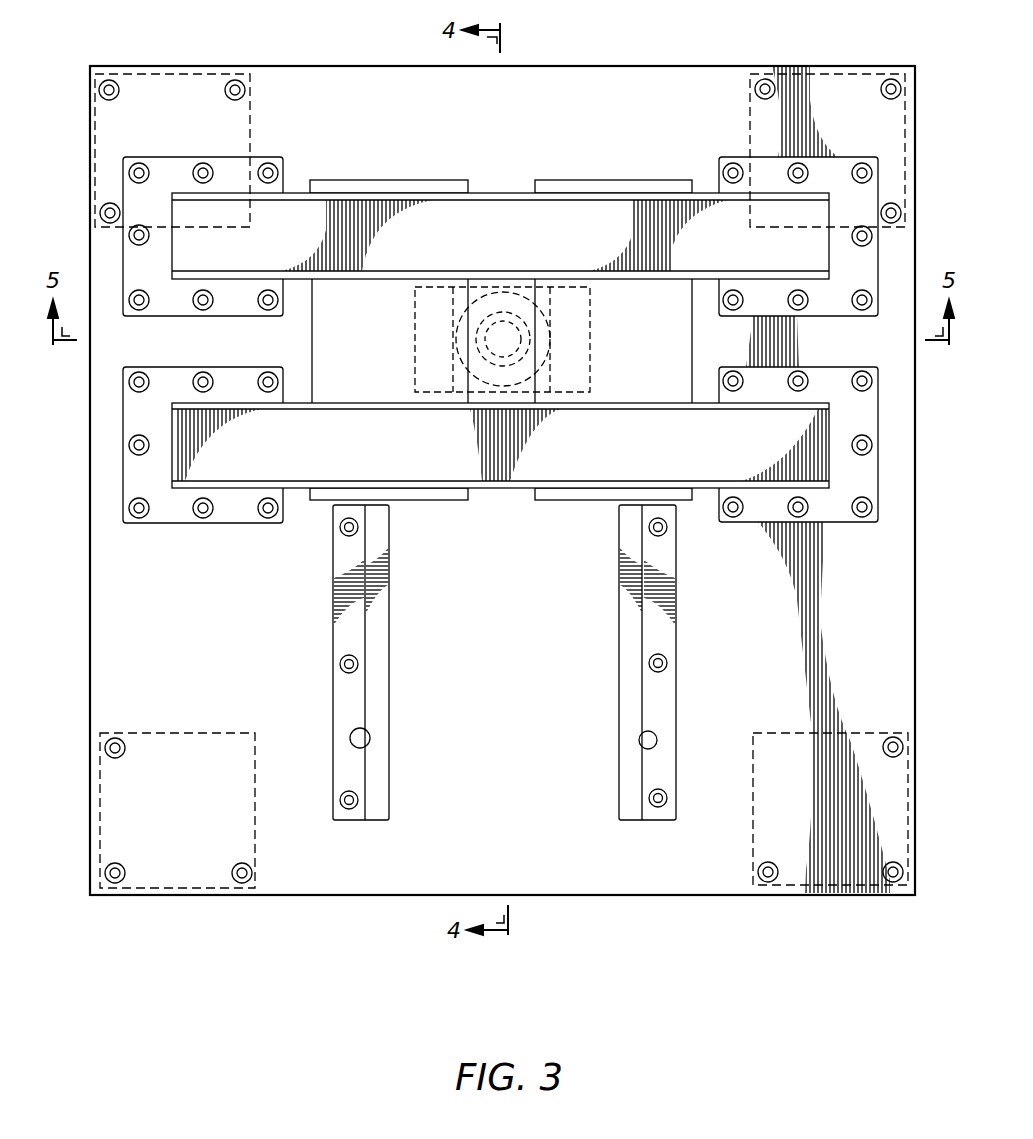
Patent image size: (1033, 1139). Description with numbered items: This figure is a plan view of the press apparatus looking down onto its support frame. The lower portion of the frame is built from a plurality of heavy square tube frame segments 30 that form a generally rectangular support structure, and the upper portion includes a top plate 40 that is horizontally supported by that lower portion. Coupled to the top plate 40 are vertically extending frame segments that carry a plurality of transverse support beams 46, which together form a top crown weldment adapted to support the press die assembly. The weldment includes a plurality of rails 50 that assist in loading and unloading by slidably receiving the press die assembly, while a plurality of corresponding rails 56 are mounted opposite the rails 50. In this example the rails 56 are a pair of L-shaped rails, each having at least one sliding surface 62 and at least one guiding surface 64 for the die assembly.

The heavy square tube frame segments 30 is at (175, 733).
The top plate 40 is at (330, 897).
The transverse support beams 46 is at (508, 192).
The rails 50 is at (388, 180).
The rails 56 is at (333, 642).
The sliding surface 62 is at (380, 797).
The guiding surface 64 is at (370, 737).